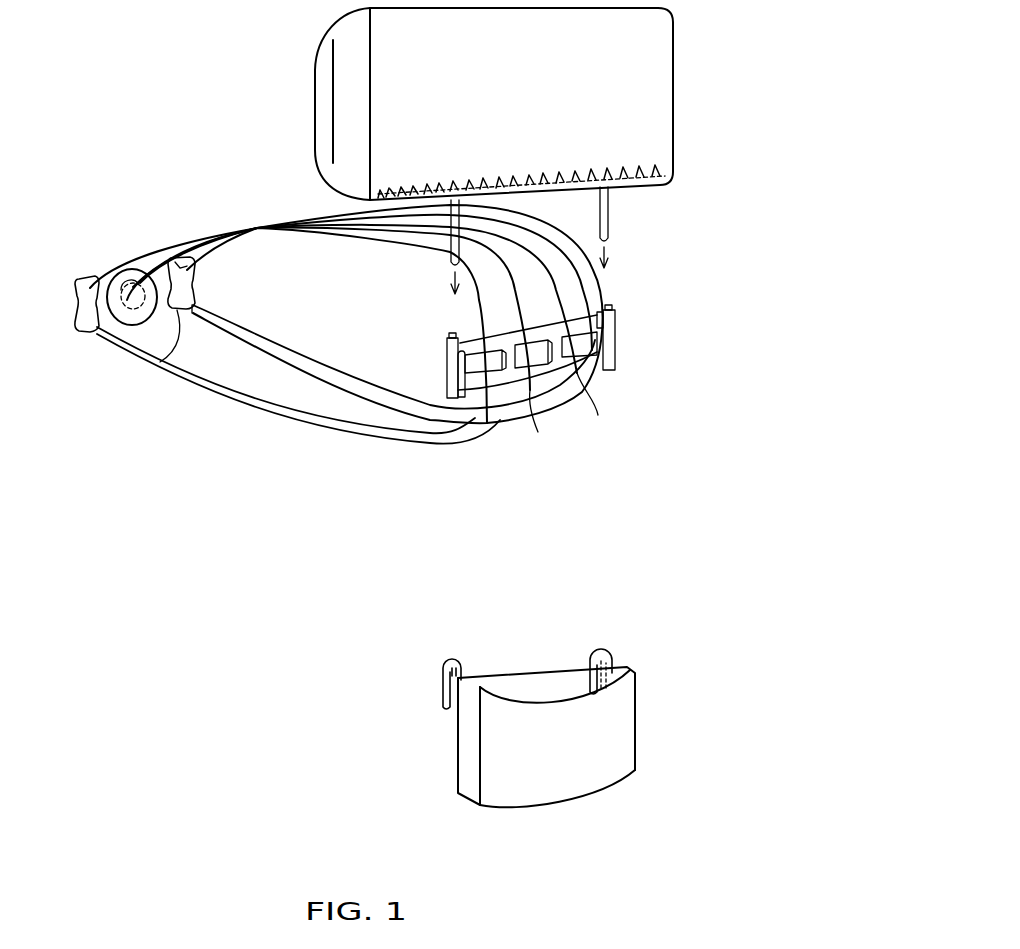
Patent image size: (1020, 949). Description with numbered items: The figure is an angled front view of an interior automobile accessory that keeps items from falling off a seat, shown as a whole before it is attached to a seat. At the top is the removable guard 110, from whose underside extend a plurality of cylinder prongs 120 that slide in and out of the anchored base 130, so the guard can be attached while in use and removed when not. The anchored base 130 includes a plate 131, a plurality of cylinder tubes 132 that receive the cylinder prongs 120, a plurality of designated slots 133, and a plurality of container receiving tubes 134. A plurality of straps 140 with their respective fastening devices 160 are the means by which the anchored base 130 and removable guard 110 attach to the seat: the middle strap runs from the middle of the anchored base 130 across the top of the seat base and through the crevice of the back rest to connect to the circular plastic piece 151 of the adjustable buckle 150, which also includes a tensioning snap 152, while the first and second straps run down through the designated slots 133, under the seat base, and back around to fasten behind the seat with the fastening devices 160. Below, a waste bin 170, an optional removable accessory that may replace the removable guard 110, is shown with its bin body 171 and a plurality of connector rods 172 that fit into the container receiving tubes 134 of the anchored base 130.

The removable guard 110 is at (655, 88).
The plurality of cylinder prongs 120 is at (605, 200).
The anchored base 130 is at (655, 403).
The plate 131 is at (560, 373).
The plurality of cylinder tubes 132 is at (613, 315).
The plurality of designated slots 133 is at (608, 342).
The plurality of container receiving tubes 134 is at (615, 331).
The plurality of straps 140 is at (487, 300).
The adjustable buckle 150 is at (164, 211).
The circular plastic piece 151 is at (140, 283).
The tensioning snap 152 is at (127, 300).
The plurality of fastening devices 160 is at (93, 328).
The waste bin 170 is at (418, 758).
The bin body 171 is at (622, 723).
The plurality of connector rods 172 is at (597, 657).